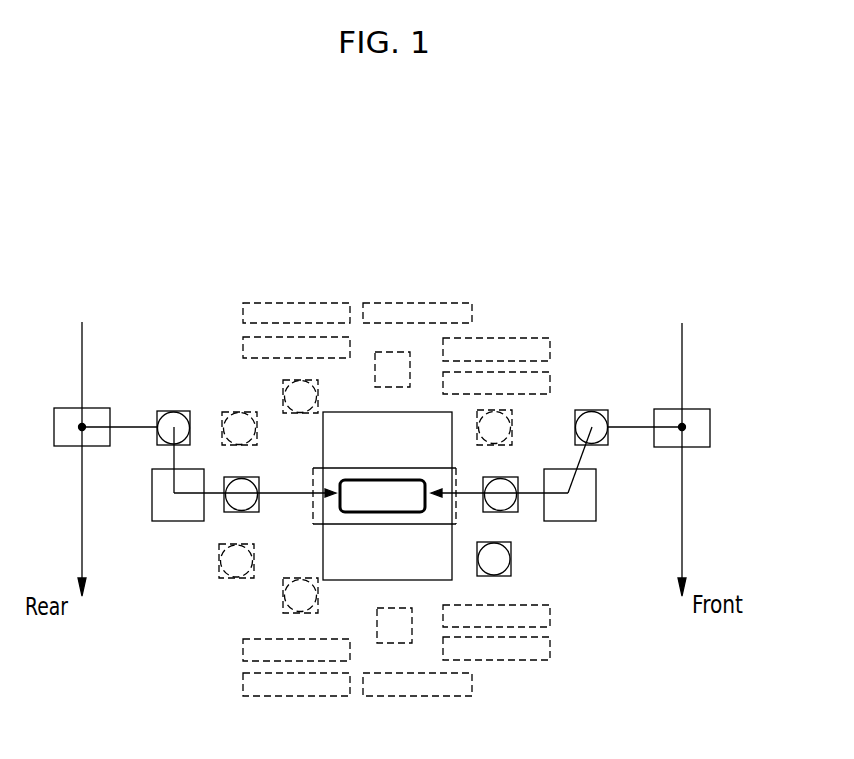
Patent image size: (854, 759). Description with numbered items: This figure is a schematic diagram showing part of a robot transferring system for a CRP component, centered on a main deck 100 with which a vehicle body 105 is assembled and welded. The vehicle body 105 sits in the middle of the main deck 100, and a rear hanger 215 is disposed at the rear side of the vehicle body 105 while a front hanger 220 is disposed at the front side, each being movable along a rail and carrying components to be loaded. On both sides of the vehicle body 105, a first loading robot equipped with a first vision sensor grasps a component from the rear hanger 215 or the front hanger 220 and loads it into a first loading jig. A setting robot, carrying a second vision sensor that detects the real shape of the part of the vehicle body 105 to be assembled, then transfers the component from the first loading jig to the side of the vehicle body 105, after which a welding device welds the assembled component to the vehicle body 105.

The main deck 100 is at (402, 246).
The vehicle body 105 is at (423, 470).
The rear hanger 215 is at (104, 408).
The front hanger 220 is at (704, 409).